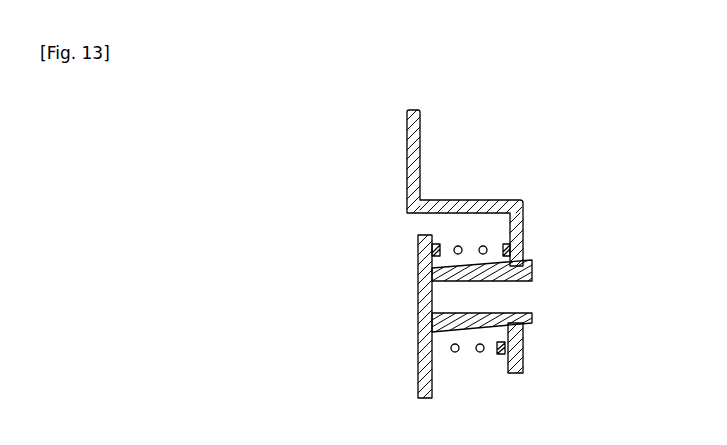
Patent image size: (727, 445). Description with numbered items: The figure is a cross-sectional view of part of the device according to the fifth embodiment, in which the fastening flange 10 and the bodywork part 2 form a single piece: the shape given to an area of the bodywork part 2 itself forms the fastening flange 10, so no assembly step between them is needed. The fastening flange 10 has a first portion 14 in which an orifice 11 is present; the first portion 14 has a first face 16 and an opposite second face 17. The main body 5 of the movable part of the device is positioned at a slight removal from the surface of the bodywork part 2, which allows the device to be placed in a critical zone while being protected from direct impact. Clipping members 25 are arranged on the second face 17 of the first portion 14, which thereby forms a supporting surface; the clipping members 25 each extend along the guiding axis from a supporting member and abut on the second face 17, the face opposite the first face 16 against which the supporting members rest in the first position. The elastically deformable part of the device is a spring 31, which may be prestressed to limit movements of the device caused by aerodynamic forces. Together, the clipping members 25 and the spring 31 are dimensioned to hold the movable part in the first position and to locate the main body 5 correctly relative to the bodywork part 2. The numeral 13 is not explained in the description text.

The bodywork part 2 is at (407, 142).
The main body 5 is at (418, 398).
The fastening flange 10 is at (495, 177).
The orifice 11 is at (527, 298).
The horizontal portion of frame 13 is at (503, 202).
The first portion 14 is at (528, 225).
The first face 16 is at (500, 363).
The second face 17 is at (523, 357).
The clipping member 25 is at (530, 267).
The spring 31 is at (470, 360).